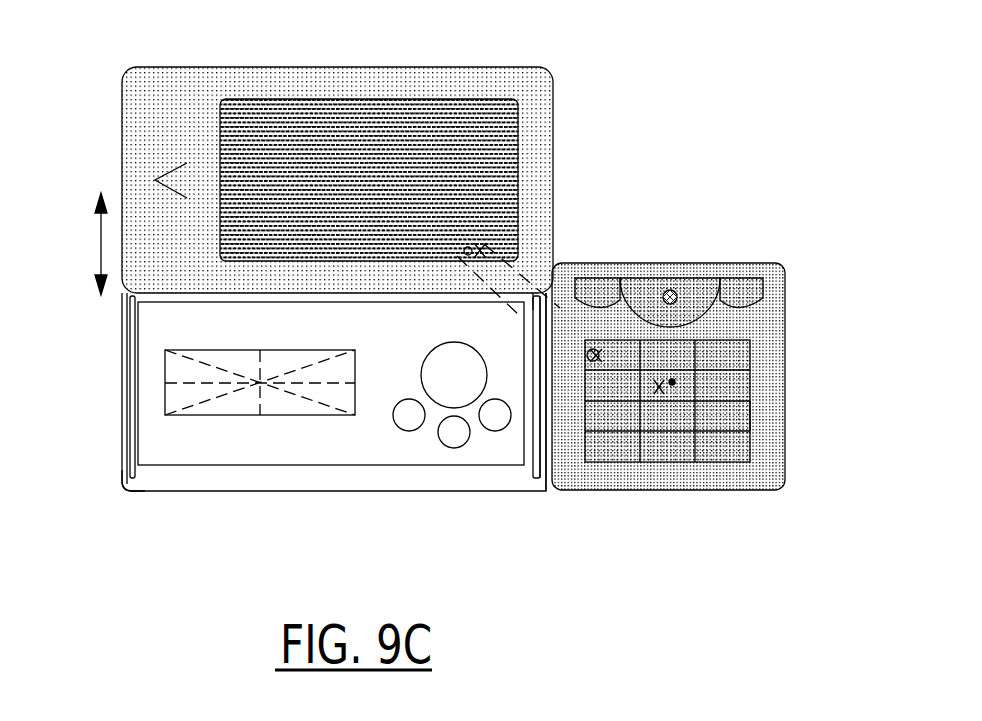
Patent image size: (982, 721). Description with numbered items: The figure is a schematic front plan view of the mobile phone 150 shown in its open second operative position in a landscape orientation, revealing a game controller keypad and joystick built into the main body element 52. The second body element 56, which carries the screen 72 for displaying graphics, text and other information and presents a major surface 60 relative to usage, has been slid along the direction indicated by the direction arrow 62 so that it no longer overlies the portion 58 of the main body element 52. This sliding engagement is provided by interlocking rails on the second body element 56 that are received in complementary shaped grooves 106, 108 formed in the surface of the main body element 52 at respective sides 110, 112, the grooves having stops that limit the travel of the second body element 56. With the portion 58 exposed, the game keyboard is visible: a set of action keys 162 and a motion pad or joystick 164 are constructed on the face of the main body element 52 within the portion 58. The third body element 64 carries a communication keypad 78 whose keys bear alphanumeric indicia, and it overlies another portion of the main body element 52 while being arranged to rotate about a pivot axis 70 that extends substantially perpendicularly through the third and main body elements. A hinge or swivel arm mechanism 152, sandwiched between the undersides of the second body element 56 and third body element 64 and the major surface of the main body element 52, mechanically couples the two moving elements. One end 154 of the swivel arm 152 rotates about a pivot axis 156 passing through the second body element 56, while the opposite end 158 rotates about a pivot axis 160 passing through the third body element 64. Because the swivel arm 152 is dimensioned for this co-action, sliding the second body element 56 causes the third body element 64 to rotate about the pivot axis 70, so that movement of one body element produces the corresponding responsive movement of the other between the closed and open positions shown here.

The mobile phone 150 is at (456, 38).
The second body element 56 is at (560, 158).
The major surface 60 is at (171, 135).
The screen 72 is at (507, 108).
The direction arrow 62 is at (100, 240).
The one end of the swivel arm 154 is at (458, 244).
The pivot axis 156 is at (478, 250).
The hinge or swivel arm mechanism 152 is at (536, 268).
The main body element 52 is at (115, 402).
The portion of the main body element 58 is at (282, 499).
The groove 106 is at (131, 466).
The side 110 is at (136, 498).
The side 112 is at (541, 500).
The groove 108 is at (547, 478).
The motion pad or joystick 164 is at (320, 432).
The action keys 162 is at (420, 445).
The third body element 64 is at (668, 258).
The pivot axis 70 is at (752, 372).
The keypad 78 is at (750, 417).
The pivot axis 160 is at (598, 357).
The opposite end of the swivel arm 158 is at (675, 382).